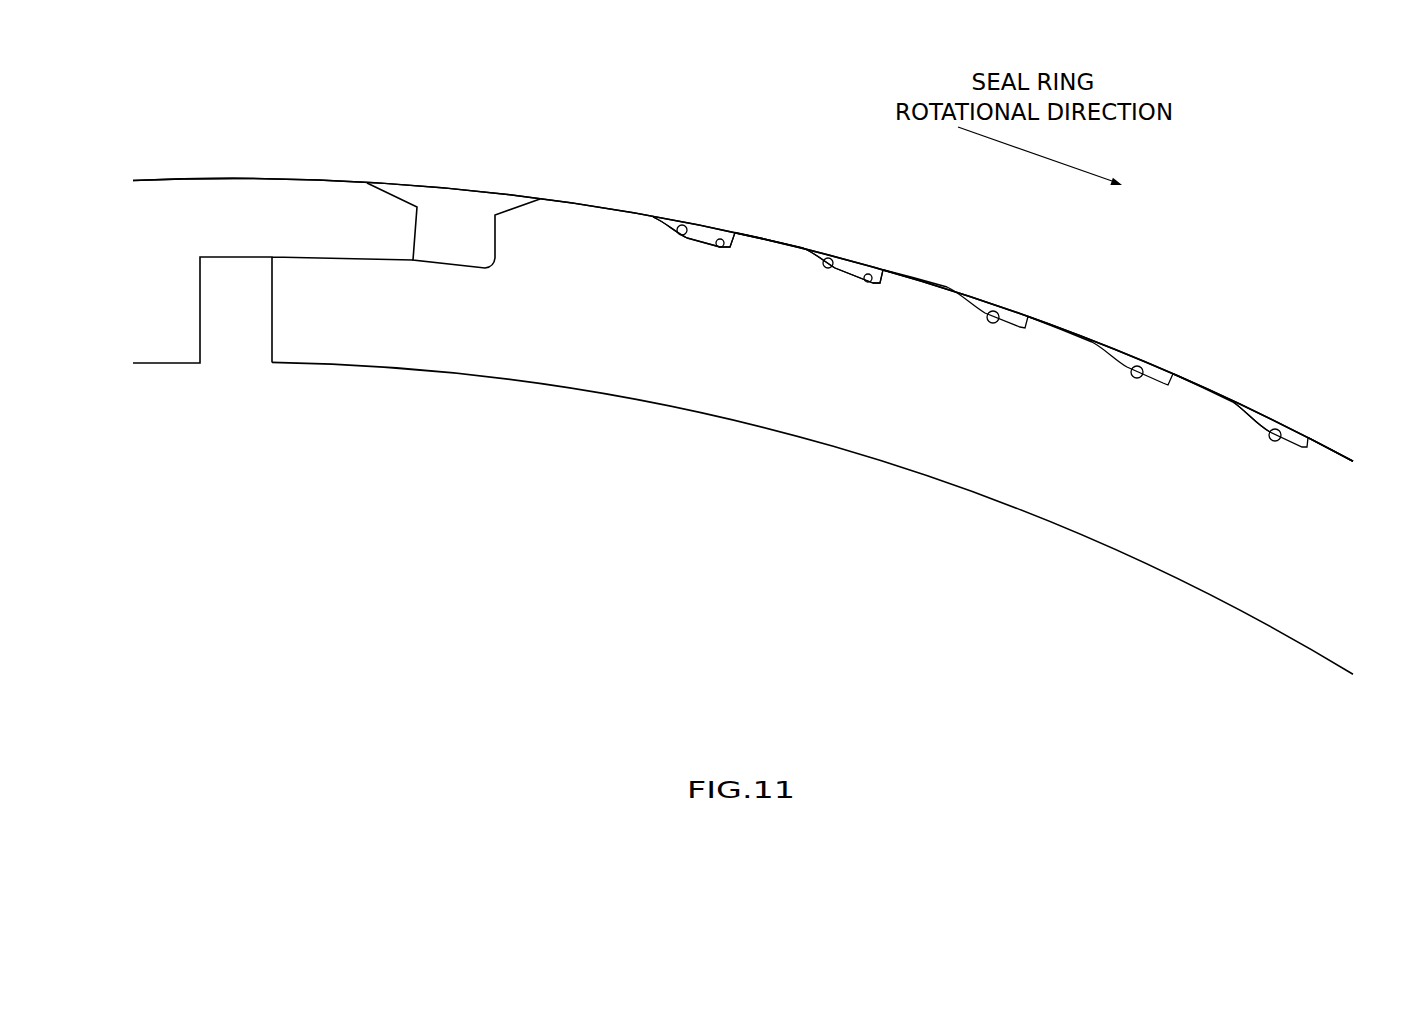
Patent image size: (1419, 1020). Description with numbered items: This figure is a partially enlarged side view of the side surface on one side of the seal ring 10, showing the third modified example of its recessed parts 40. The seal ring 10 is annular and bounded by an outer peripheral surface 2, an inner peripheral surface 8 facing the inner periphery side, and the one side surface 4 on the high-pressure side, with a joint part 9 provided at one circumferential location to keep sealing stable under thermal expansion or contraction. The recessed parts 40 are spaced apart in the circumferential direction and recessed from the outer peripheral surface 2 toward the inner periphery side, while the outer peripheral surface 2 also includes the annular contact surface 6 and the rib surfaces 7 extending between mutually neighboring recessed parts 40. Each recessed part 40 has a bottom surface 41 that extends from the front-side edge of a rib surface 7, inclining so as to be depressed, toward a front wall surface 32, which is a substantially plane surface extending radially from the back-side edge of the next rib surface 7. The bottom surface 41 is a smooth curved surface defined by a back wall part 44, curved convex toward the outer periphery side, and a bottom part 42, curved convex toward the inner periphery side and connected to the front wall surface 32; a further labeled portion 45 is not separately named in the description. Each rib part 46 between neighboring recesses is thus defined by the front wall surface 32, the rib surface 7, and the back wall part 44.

The outer peripheral surface 2 is at (1352, 432).
The one side surface 4 is at (368, 320).
The contact surface 6 is at (1268, 410).
The rib surface 7 is at (753, 235).
The inner peripheral surface 8 is at (477, 377).
The joint part 9 is at (308, 218).
The seal ring 10 is at (1221, 182).
The front wall surface 32 is at (720, 228).
The recessed part 40 is at (706, 200).
The bottom surface 41 is at (690, 212).
The bottom part 42 is at (727, 247).
The back wall part 44 is at (683, 238).
The bottom surface of groove 45 is at (700, 233).
The rib part 46 is at (755, 263).